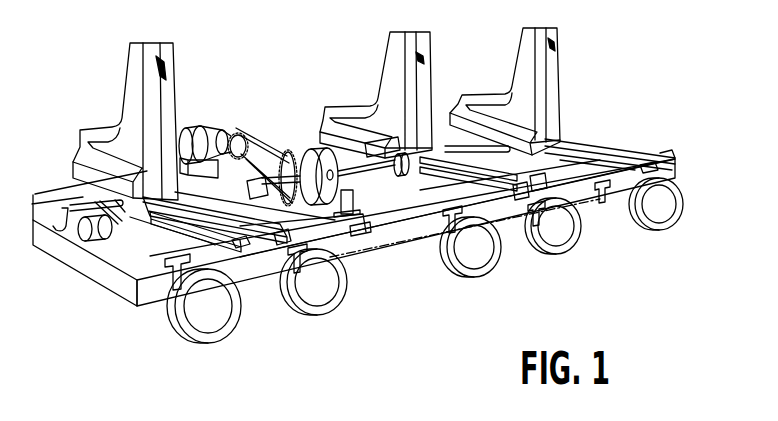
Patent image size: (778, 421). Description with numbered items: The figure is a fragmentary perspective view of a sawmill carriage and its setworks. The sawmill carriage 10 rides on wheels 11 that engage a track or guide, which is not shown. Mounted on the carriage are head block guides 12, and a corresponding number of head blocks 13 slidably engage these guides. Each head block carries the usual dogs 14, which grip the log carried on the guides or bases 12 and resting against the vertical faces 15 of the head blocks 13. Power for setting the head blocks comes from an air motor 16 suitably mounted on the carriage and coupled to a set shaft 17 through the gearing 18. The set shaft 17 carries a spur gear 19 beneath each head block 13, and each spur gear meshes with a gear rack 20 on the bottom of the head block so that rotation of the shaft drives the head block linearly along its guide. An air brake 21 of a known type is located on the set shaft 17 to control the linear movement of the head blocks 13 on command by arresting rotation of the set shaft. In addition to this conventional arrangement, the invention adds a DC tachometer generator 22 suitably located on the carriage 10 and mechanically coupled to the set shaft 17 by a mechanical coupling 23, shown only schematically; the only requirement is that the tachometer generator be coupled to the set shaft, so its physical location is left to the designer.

The sawmill carriage 10 is at (400, 247).
The wheels 11 is at (242, 322).
The head block guides 12 is at (186, 222).
The head blocks 13 is at (174, 50).
The dogs 14 is at (172, 68).
The vertical faces 15 is at (173, 102).
The air motor 16 is at (212, 130).
The set shaft 17 is at (366, 168).
The gearing 18 is at (266, 148).
The spur gear 19 is at (396, 178).
The gear rack 20 is at (378, 142).
The air brake 21 is at (311, 147).
The DC tachometer generator 22 is at (118, 246).
The mechanical coupling 23 is at (120, 222).